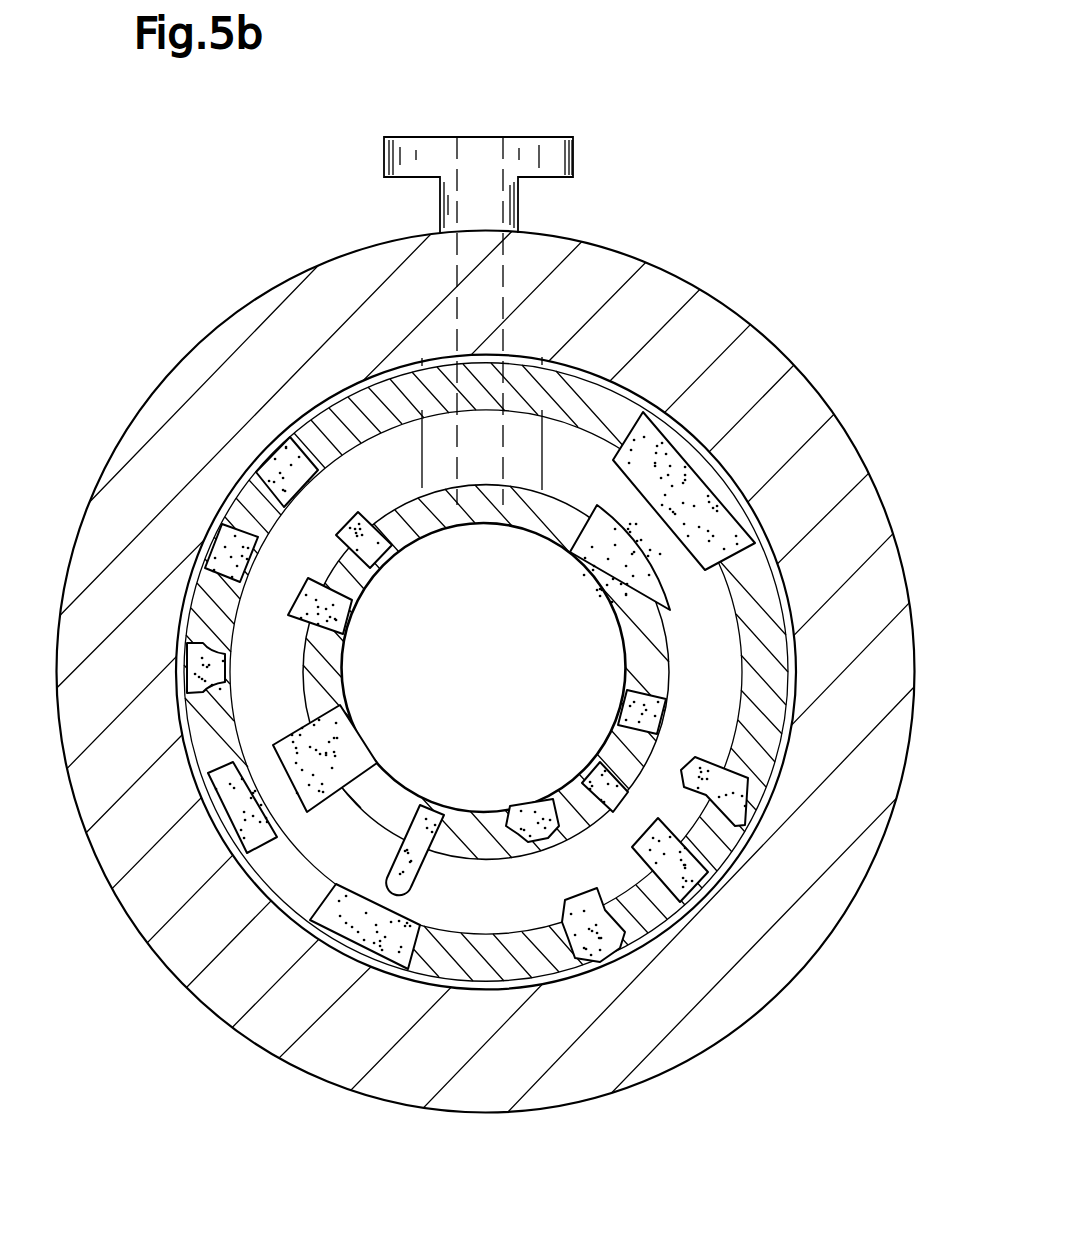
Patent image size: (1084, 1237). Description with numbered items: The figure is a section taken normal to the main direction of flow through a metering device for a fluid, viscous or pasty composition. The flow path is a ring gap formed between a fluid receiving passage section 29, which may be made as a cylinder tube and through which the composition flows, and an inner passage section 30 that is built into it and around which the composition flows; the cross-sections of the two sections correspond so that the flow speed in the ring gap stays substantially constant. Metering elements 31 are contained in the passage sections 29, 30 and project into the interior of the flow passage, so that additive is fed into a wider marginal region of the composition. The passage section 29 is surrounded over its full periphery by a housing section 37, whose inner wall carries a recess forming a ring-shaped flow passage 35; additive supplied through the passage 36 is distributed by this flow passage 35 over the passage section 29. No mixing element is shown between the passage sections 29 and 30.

The fluid receiving passage section 29 is at (352, 412).
The passage section around which fluid flows 30 is at (640, 665).
The metering element 31 is at (717, 526).
The flow passage 35 is at (578, 372).
The passage 36 is at (493, 150).
The housing section 37 is at (752, 359).